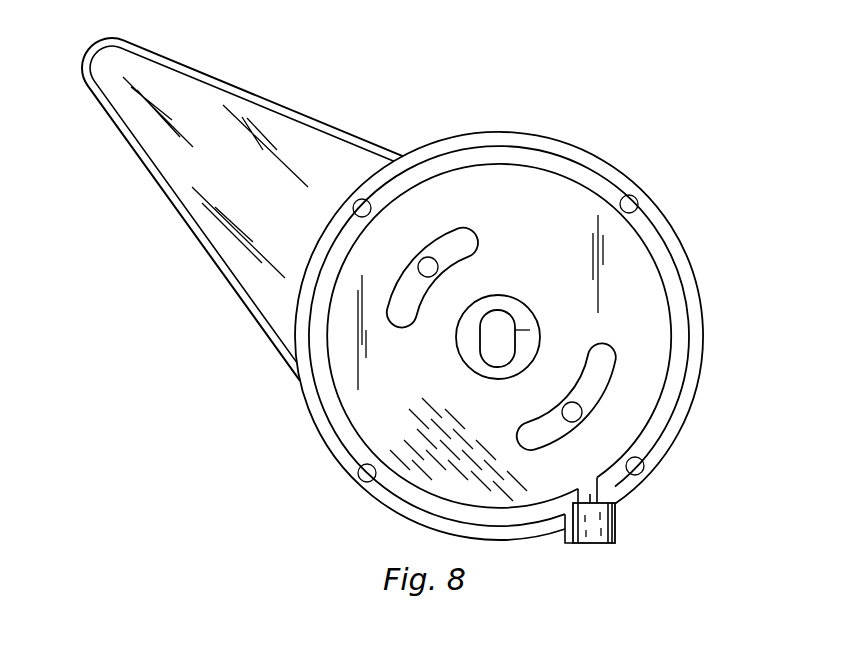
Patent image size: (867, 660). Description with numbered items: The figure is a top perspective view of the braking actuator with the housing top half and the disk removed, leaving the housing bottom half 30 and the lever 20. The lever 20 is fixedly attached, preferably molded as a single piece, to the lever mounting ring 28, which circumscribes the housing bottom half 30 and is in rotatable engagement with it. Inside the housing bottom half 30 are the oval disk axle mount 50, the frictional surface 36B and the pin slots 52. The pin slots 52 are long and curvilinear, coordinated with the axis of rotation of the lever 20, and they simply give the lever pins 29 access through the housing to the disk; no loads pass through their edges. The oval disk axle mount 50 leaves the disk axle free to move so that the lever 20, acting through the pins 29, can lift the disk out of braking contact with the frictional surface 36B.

The lever 20 is at (193, 92).
The lever mounting ring 28 is at (317, 418).
The lever pins 29 is at (575, 412).
The housing bottom half 30 is at (680, 377).
The frictional surface 36B is at (450, 457).
The oval disk axle mount 50 is at (536, 322).
The pin slots 52 is at (612, 352).